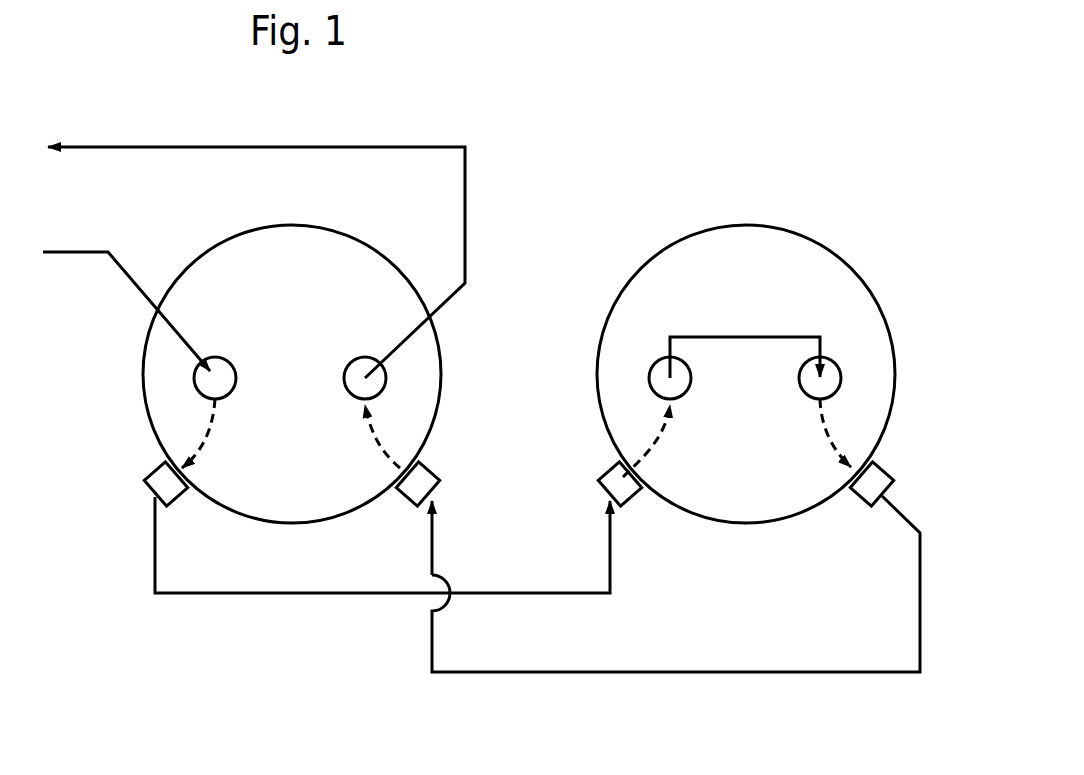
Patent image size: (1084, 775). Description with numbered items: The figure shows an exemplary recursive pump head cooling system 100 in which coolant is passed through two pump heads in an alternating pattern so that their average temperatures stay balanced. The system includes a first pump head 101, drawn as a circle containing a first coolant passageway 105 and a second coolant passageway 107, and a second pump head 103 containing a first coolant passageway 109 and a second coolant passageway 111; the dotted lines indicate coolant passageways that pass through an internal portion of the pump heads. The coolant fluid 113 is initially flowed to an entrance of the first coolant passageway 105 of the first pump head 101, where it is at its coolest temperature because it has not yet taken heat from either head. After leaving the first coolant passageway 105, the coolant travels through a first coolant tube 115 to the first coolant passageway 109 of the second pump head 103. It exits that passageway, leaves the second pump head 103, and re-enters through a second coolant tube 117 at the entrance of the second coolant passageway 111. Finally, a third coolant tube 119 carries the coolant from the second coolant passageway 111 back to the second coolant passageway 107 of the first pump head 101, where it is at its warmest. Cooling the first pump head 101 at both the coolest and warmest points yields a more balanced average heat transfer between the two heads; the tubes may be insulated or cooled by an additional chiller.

The pump system 100 is at (782, 84).
The first pump head 101 is at (292, 374).
The second pump head 103 is at (746, 374).
The first coolant passageway 105 is at (207, 438).
The second coolant passageway 107 is at (373, 440).
The first coolant passageway 109 is at (660, 443).
The second coolant passageway 111 is at (820, 442).
The coolant fluid 113 is at (128, 266).
The first coolant tube 115 is at (219, 597).
The second coolant tube 117 is at (799, 331).
The third coolant tube 119 is at (690, 677).